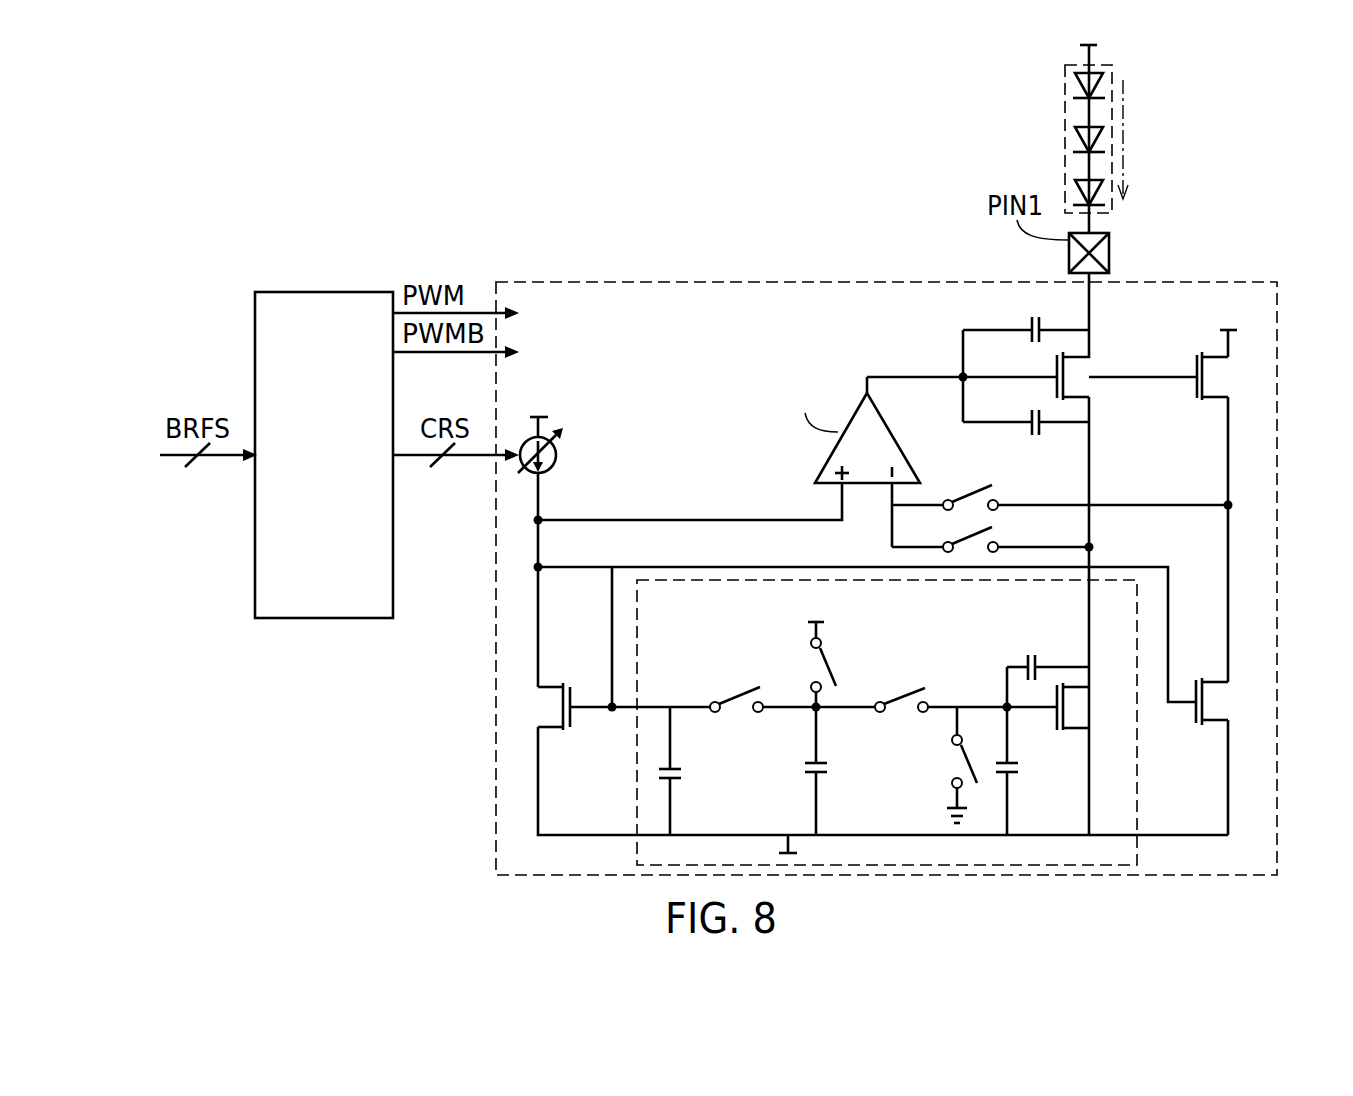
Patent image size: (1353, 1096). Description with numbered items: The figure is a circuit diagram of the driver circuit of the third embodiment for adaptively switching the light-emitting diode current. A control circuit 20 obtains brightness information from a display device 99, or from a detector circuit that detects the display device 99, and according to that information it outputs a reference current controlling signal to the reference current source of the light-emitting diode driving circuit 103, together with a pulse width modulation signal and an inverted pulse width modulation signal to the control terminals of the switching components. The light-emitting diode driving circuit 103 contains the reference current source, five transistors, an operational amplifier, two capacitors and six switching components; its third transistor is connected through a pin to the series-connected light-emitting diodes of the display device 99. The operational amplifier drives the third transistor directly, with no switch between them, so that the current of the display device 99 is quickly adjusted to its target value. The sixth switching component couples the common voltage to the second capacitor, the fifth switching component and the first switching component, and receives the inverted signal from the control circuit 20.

The control circuit 20 is at (325, 292).
The display device 99 is at (1065, 120).
The light-emitting diode driving circuit 103 is at (795, 281).